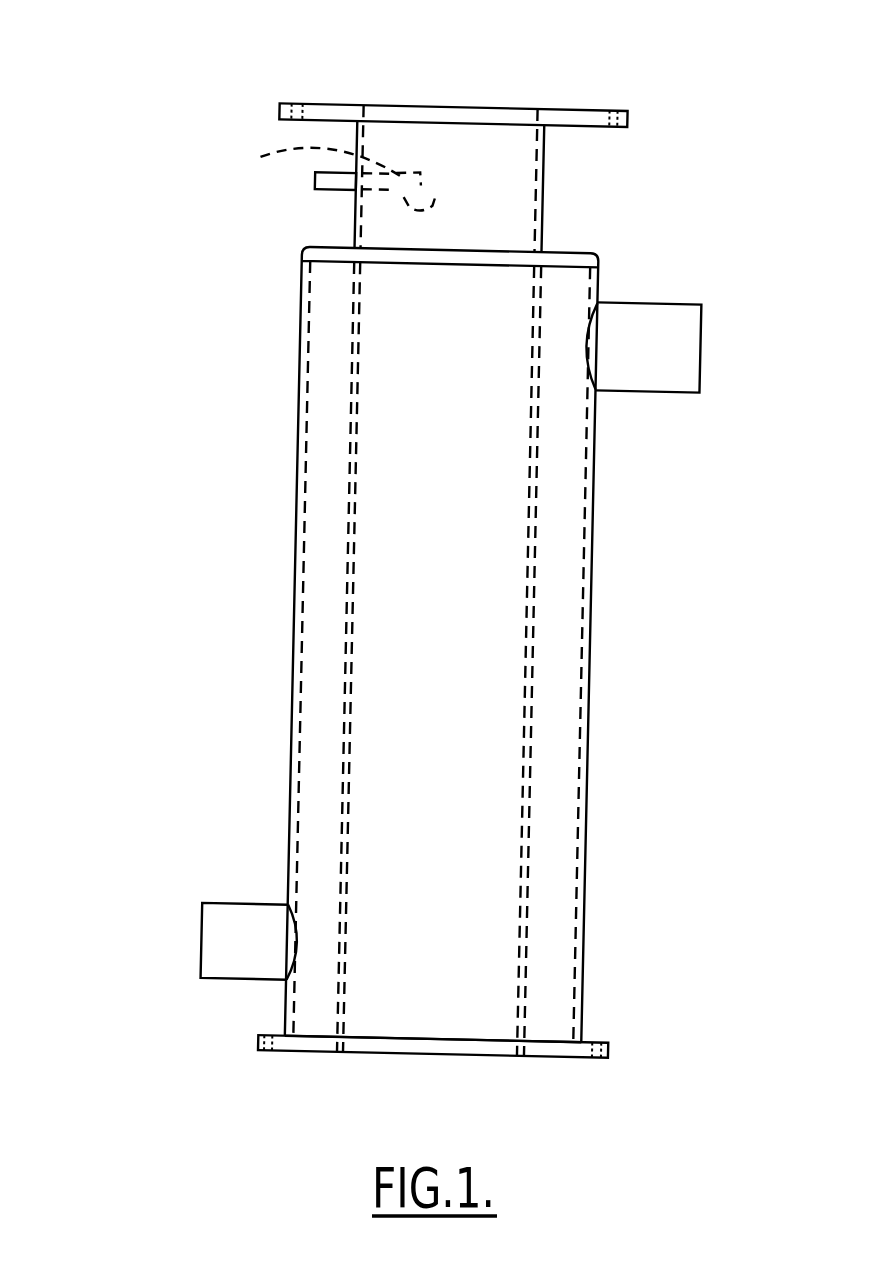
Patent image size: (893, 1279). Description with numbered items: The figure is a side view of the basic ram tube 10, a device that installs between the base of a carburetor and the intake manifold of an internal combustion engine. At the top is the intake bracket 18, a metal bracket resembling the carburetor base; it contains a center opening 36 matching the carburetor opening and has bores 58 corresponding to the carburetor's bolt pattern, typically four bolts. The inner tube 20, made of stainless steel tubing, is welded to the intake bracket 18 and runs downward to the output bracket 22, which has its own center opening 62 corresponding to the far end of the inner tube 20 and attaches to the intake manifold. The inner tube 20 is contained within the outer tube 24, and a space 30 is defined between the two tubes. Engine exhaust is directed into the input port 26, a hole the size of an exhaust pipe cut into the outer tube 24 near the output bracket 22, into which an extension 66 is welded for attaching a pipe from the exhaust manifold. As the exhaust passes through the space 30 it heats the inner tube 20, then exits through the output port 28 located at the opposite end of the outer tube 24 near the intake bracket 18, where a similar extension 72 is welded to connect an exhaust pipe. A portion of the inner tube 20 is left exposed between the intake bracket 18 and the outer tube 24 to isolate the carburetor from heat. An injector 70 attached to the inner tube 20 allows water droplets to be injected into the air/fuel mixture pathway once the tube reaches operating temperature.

The ram tube 10 is at (186, 281).
The intake bracket 18 is at (450, 178).
The inner tube 20 is at (439, 659).
The output bracket 22 is at (433, 1046).
The outer tube 24 is at (442, 644).
The input port 26 is at (292, 942).
The output port 28 is at (592, 346).
The space 30 is at (301, 648).
The center opening 36 is at (453, 115).
The bores 58 is at (443, 580).
The center opening 62 is at (433, 1039).
The extension 66 is at (245, 941).
The injector 70 is at (347, 179).
The extension 72 is at (648, 347).